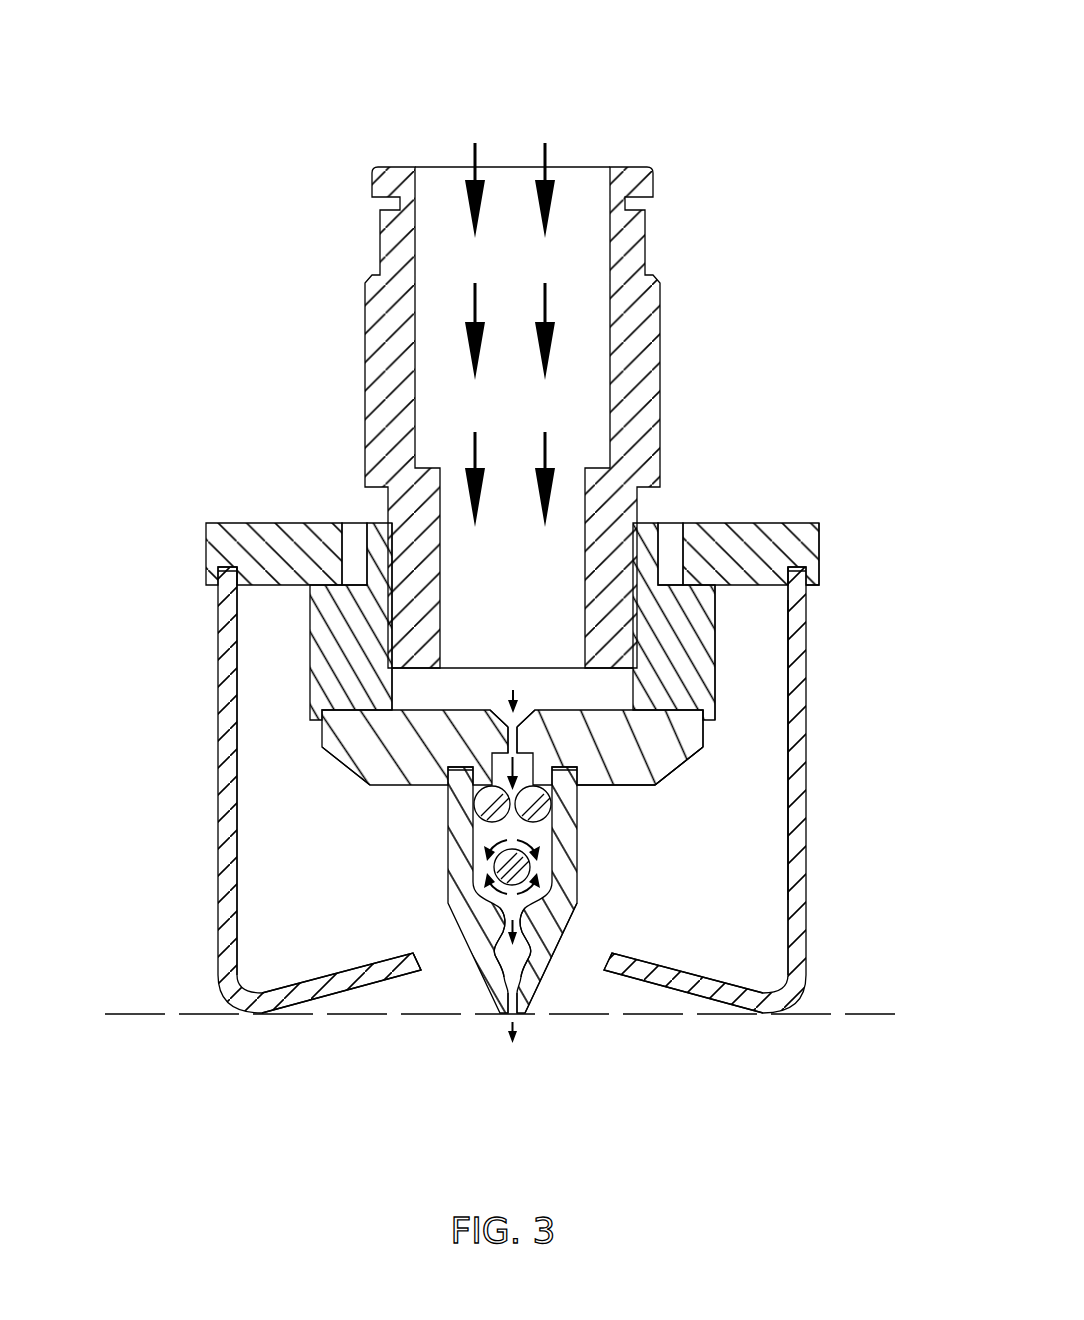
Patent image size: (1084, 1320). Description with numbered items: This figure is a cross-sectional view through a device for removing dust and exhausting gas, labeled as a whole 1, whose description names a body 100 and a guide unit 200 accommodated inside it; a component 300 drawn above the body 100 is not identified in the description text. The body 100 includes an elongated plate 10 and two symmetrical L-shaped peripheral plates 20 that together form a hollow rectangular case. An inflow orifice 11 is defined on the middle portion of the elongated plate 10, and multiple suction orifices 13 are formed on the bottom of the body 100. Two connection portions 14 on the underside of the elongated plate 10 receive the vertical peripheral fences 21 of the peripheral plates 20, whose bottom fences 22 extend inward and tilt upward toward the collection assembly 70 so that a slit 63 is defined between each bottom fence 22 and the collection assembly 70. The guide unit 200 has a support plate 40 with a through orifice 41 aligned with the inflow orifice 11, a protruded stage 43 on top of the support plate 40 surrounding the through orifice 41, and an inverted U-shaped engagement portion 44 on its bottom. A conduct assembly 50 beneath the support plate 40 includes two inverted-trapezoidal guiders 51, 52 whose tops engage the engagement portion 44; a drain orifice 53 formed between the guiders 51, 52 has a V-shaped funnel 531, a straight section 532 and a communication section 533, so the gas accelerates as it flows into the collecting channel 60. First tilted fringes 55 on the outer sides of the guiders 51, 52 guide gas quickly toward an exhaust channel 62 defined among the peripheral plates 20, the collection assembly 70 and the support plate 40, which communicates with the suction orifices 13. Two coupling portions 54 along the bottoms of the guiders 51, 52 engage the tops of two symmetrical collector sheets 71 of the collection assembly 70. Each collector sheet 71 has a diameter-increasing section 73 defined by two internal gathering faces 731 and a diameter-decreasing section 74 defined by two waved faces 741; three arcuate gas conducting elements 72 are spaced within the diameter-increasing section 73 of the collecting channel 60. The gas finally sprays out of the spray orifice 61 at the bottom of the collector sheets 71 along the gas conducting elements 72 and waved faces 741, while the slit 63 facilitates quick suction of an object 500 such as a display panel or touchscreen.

The spray device 1 is at (169, 208).
The liquid supply pipe 300 is at (664, 255).
The body 100 is at (168, 584).
The elongated plate 10 is at (793, 514).
The inflow orifice 11 is at (672, 560).
The connection portion 14 is at (800, 561).
The protruded stage 43 is at (372, 572).
The peripheral plate 20 is at (820, 643).
The vertical peripheral fence 21 is at (233, 748).
The bottom fence 22 is at (330, 990).
The suction orifice 13 is at (442, 962).
The exhaust channel 62 is at (716, 895).
The slit 63 is at (637, 993).
The support plate 40 is at (304, 648).
The through orifice 41 is at (418, 690).
The inverted U-shaped engagement portion 44 is at (682, 707).
The conduct assembly 50 is at (726, 723).
The guider 51 is at (334, 766).
The guider 52 is at (672, 803).
The drain orifice 53 is at (513, 688).
The funnel 531 is at (497, 728).
The straight section 532 is at (528, 728).
The communication section 533 is at (500, 734).
The coupling portion 54 is at (703, 738).
The first tilted fringe 55 is at (690, 765).
The guide unit 200 is at (677, 777).
The collecting channel 60 is at (484, 838).
The collection assembly 70 is at (571, 976).
The collector sheet 71 is at (463, 917).
The gas conducting element 72 is at (483, 798).
The diameter-increasing section 73 is at (524, 831).
The internal gathering face 731 is at (543, 854).
The diameter-decreasing section 74 is at (538, 995).
The waved face 741 is at (507, 976).
The spray orifice 61 is at (507, 1013).
The object 500 is at (886, 1004).